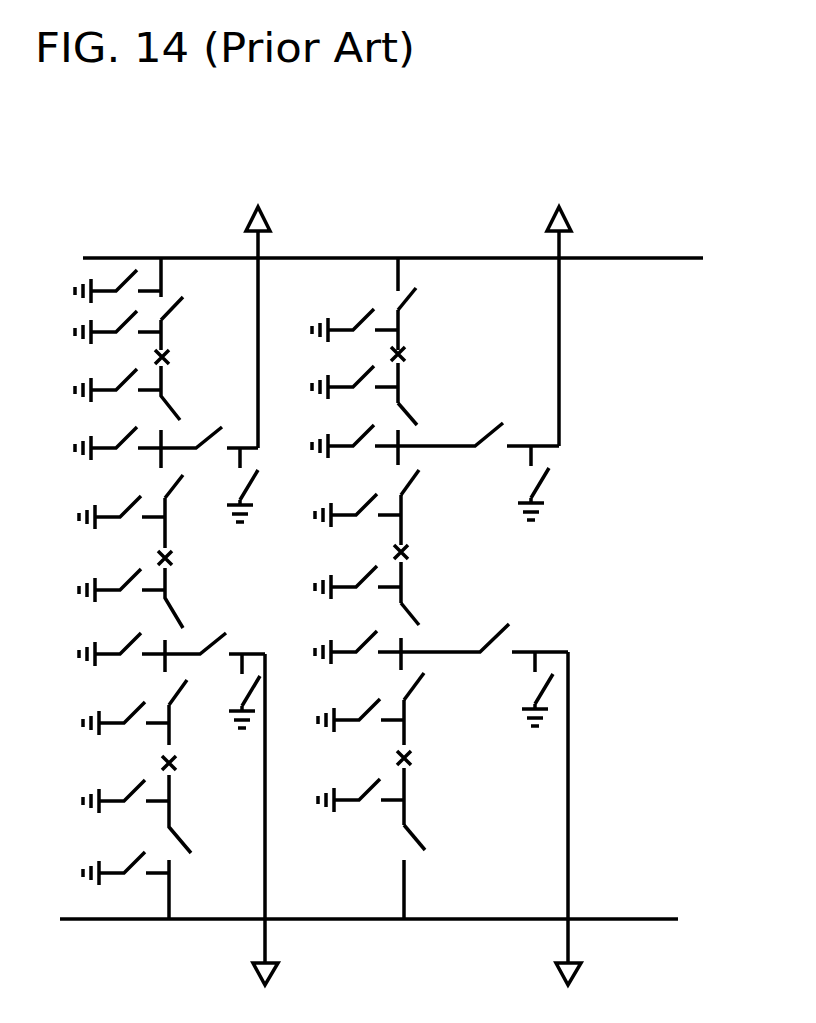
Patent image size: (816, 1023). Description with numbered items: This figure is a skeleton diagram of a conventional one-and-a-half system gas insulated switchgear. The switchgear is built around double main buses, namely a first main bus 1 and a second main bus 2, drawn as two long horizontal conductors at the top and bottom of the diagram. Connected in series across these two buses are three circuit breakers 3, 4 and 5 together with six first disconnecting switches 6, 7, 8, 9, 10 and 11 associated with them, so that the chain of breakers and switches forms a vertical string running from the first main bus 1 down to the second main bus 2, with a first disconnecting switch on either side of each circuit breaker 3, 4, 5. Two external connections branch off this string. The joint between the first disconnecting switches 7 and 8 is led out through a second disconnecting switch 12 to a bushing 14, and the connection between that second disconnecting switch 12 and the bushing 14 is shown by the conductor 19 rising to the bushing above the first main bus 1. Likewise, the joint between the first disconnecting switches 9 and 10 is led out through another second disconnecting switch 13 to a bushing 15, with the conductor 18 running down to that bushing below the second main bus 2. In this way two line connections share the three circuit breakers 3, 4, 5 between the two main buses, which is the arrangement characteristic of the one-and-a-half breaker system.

The first main bus 1 is at (655, 253).
The second main bus 2 is at (645, 920).
The circuit breaker 3 is at (412, 354).
The circuit breaker 4 is at (413, 553).
The circuit breaker 5 is at (416, 758).
The first disconnecting switch 6 is at (414, 297).
The first disconnecting switch 7 is at (415, 413).
The first disconnecting switch 8 is at (415, 485).
The first disconnecting switch 9 is at (419, 617).
The first disconnecting switch 10 is at (418, 687).
The first disconnecting switch 11 is at (420, 835).
The second disconnecting switch 12 is at (512, 432).
The second disconnecting switch 13 is at (512, 632).
The bushing 14 is at (561, 210).
The bushing 15 is at (557, 972).
The connecting conductor 18 is at (571, 765).
The connecting conductor 19 is at (562, 392).